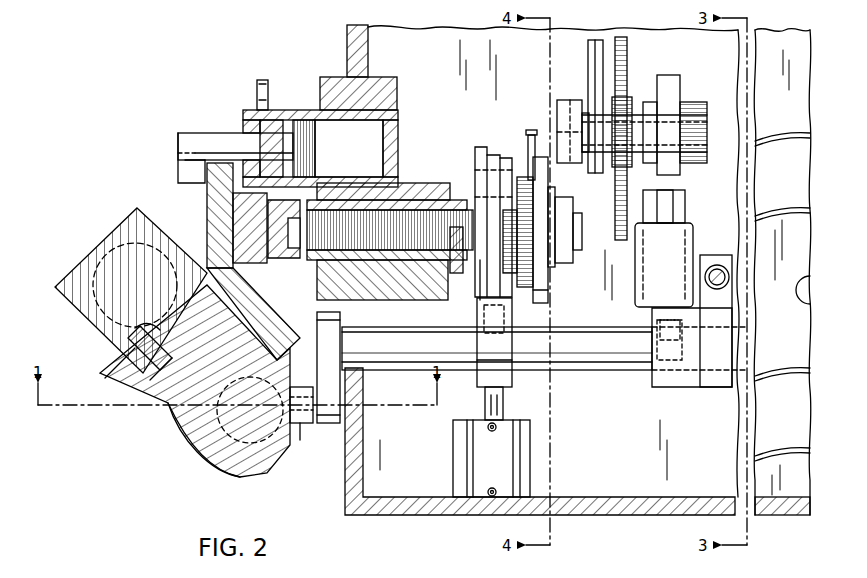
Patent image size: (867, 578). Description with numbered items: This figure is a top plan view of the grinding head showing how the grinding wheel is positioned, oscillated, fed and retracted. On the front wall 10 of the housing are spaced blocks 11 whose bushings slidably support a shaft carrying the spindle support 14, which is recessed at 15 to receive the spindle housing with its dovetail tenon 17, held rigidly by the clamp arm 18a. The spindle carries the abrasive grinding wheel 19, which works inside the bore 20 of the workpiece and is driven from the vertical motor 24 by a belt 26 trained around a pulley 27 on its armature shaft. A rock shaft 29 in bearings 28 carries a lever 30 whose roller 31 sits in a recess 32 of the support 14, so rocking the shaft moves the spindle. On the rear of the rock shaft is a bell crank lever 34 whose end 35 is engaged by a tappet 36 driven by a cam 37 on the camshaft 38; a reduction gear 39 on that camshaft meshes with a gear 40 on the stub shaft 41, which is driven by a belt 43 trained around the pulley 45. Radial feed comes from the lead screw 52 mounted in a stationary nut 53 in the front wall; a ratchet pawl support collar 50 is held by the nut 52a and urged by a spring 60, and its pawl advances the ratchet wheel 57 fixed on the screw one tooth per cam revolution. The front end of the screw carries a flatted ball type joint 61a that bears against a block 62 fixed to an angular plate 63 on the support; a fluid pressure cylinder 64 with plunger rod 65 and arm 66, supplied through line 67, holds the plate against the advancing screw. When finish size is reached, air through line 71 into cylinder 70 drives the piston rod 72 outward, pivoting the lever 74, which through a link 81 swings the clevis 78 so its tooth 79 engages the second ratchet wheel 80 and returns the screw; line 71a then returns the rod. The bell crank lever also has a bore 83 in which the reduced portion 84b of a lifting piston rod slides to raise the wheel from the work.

The front wall 10 is at (363, 455).
The blocks 11 is at (203, 448).
The spindle support 14 is at (195, 381).
The recess 15 is at (152, 370).
The dovetail tenon 17 is at (128, 338).
The clamp arm 18a is at (115, 368).
The abrasive grinding wheel 19 is at (117, 230).
The bore 20 is at (92, 265).
The motor 24 is at (781, 408).
The belt 26 is at (766, 198).
The pulley 27 is at (787, 331).
The bearings 28 is at (368, 370).
The rock shaft 29 is at (402, 352).
The lever 30 is at (328, 379).
The roller 31 is at (306, 442).
The recess 32 is at (304, 440).
The bell crank lever 34 is at (715, 380).
The end of lever 35 is at (650, 388).
The tappet 36 is at (690, 210).
The cam 37 is at (690, 102).
The camshaft 38 is at (664, 100).
The reduction gear 39 is at (626, 42).
The gear 40 is at (632, 103).
The stub shaft 41 is at (556, 110).
The belt 43 is at (594, 42).
The pulley 45 is at (586, 105).
The ratchet pawl support collar 50 is at (545, 288).
The lead screw 52 is at (414, 208).
The nut 52a is at (562, 258).
The stationary nut 53 is at (437, 205).
The ratchet wheel 57 is at (526, 178).
The spring 60 is at (532, 129).
The flatted ball type joint 61a is at (375, 280).
The block 62 is at (250, 252).
The angular plate 63 is at (210, 203).
The fluid pressure cylinder 64 is at (291, 110).
The plunger rod 65 is at (240, 148).
The arm 66 is at (193, 172).
The line 67 is at (257, 92).
The cylinder 70 is at (465, 462).
The line 71 is at (488, 491).
The line 71a is at (488, 428).
The piston rod 72 is at (488, 410).
The lever 74 is at (478, 322).
The clevis 78 is at (480, 152).
The pawl or tooth 79 is at (536, 192).
The second ratchet wheel 80 is at (510, 280).
The link 81 is at (488, 292).
The bore 83 is at (719, 266).
The reduced portion 84b is at (715, 268).